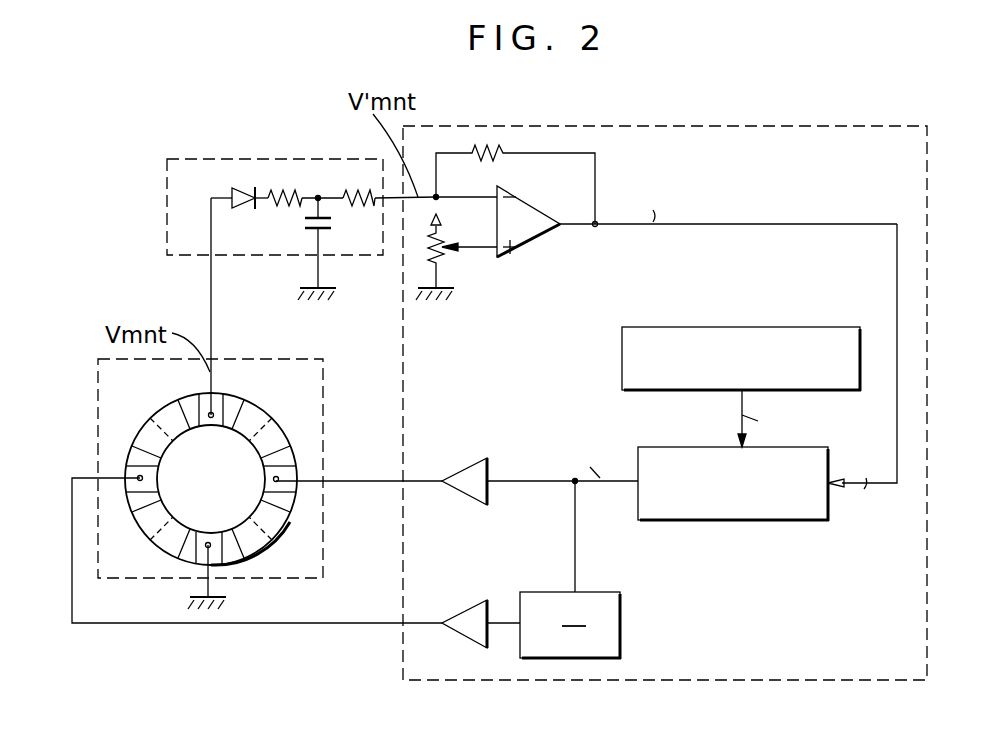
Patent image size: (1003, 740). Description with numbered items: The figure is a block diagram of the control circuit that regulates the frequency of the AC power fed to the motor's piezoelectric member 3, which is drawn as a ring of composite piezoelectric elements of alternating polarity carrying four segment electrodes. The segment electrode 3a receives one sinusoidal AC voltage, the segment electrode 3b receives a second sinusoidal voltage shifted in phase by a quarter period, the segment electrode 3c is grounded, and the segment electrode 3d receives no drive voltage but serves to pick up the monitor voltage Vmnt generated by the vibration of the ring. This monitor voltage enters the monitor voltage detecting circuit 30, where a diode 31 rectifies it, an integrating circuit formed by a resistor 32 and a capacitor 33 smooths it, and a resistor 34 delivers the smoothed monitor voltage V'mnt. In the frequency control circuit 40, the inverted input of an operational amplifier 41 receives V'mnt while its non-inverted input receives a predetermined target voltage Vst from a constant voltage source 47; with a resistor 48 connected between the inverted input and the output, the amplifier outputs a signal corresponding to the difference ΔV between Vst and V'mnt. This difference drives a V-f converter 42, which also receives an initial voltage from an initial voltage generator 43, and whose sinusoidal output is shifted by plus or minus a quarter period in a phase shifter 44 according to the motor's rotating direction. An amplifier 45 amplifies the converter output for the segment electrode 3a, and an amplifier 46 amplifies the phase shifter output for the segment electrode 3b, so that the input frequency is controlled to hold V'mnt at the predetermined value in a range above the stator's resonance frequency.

The piezoelectric member 3 is at (240, 410).
The segment electrode 3a is at (292, 432).
The segment electrode 3b is at (120, 440).
The segment electrode 3c is at (220, 550).
The segment electrode 3d is at (217, 405).
The monitor voltage detecting circuit 30 is at (301, 210).
The diode 31 is at (240, 188).
The resistor 32 is at (283, 192).
The capacitor 33 is at (306, 236).
The resistor 34 is at (363, 208).
The frequency control circuit 40 is at (928, 222).
The operational amplifier 41 is at (538, 216).
The V-f converter 42 is at (792, 521).
The initial voltage generator 43 is at (805, 327).
The phase shifter 44 is at (612, 622).
The amplifier 45 is at (466, 465).
The amplifier 46 is at (466, 612).
The constant voltage source 47 is at (453, 253).
The resistor 48 is at (497, 150).